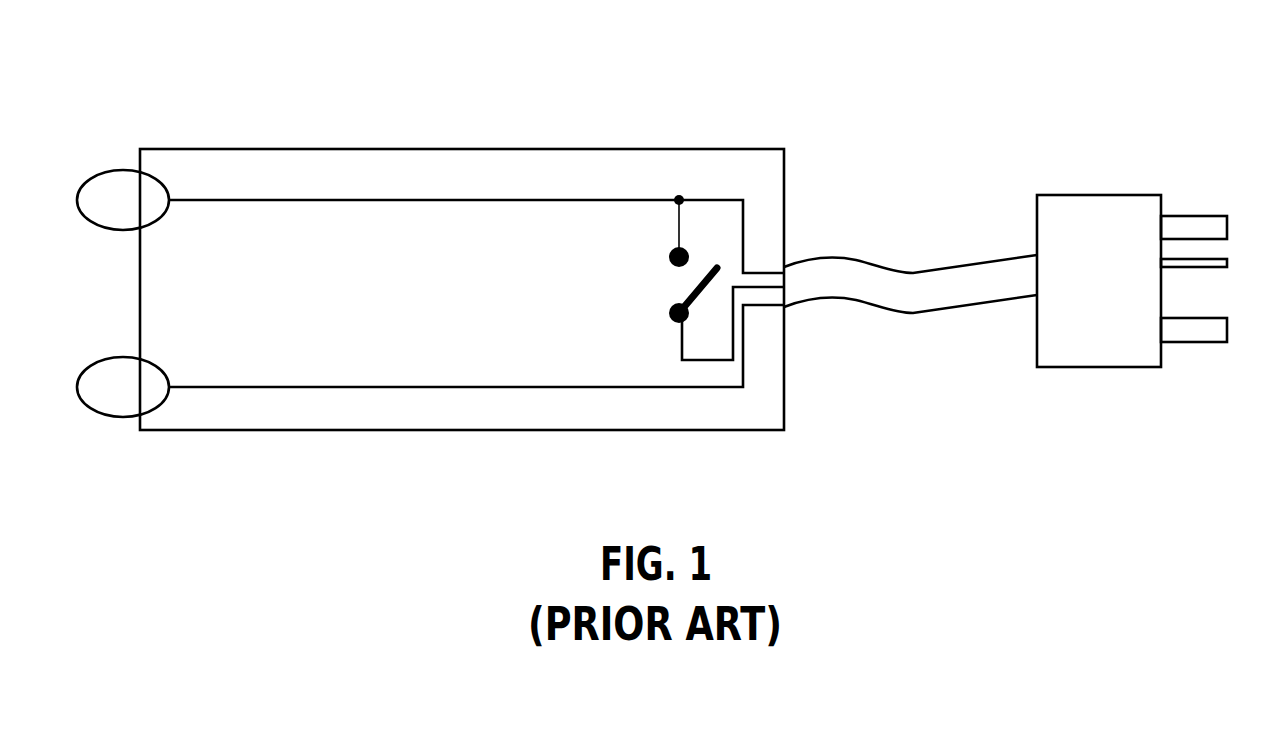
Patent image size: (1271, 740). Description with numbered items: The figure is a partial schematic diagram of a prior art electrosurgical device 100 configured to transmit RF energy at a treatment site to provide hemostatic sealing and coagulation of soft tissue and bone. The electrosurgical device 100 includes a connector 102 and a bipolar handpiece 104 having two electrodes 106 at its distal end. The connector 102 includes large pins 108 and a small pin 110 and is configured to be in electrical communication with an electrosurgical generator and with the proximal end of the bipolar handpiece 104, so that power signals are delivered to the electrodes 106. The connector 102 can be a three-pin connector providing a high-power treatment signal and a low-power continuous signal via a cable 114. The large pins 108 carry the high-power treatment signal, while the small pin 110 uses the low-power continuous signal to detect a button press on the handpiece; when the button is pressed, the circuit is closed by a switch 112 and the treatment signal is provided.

The electrosurgical device 100 is at (374, 118).
The connector 102 is at (1095, 195).
The bipolar handpiece 104 is at (542, 148).
The electrodes 106 is at (122, 170).
The large pins 108 is at (1187, 213).
The small pin 110 is at (1215, 262).
The switch 112 is at (713, 268).
The cable 114 is at (998, 263).